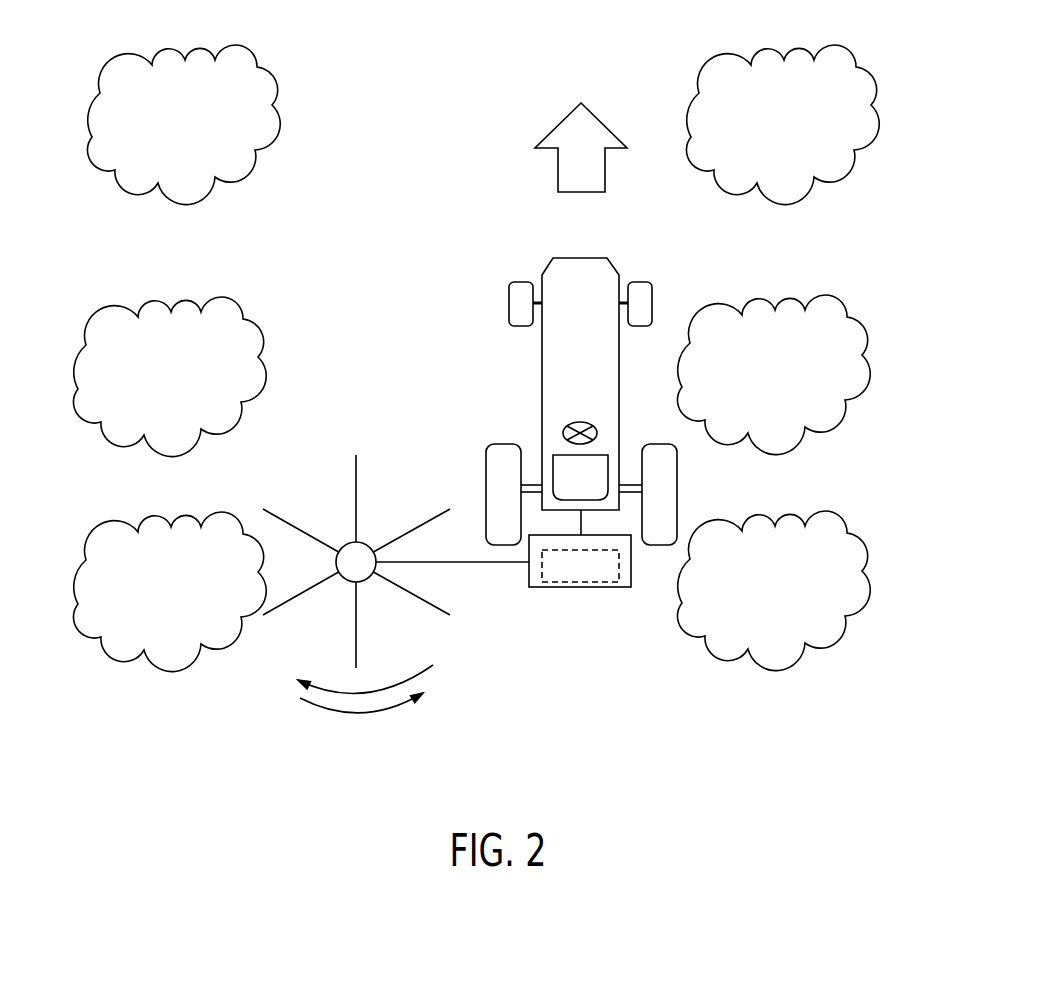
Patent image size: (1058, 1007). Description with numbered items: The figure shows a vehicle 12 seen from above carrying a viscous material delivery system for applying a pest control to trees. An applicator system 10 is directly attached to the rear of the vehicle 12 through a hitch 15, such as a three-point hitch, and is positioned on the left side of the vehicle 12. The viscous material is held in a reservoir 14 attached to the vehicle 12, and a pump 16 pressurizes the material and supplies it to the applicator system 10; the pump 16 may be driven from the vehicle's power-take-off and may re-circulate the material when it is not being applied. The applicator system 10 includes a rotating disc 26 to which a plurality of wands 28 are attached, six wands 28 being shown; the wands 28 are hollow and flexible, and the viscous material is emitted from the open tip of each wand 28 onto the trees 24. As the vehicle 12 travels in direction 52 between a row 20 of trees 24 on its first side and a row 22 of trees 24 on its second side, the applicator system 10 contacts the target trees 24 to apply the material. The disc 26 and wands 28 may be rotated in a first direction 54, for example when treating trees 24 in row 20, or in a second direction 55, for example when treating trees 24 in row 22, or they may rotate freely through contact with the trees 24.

The applicator system 10 is at (360, 422).
The vehicle 12 is at (643, 247).
The reservoir 14 is at (627, 582).
The hitch 15 is at (581, 523).
The pump 16 is at (570, 579).
The row 20 is at (169, 638).
The row 22 is at (773, 639).
The trees 24 is at (174, 129).
The rotating disc 26 is at (370, 577).
The wands 28 is at (283, 520).
The direction 52 is at (571, 173).
The first direction 54 is at (433, 668).
The second direction 55 is at (357, 713).